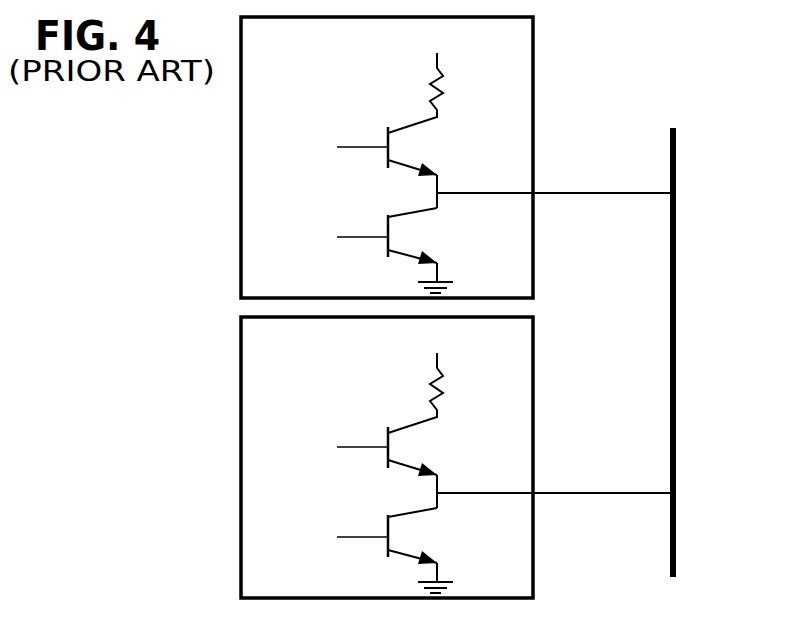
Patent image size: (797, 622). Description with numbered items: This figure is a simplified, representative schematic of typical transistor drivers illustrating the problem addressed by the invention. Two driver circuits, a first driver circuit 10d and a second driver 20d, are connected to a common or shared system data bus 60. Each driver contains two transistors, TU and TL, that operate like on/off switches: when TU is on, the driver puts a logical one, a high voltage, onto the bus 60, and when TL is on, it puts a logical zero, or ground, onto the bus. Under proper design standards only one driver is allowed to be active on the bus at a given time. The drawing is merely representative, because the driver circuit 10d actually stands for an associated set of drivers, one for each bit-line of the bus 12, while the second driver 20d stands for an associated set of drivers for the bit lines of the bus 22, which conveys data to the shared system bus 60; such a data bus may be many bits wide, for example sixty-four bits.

The driver circuit 10d is at (534, 85).
The second driver 20d is at (534, 380).
The bus 12 is at (612, 193).
The bus 22 is at (612, 493).
The shared bus 60 is at (676, 262).